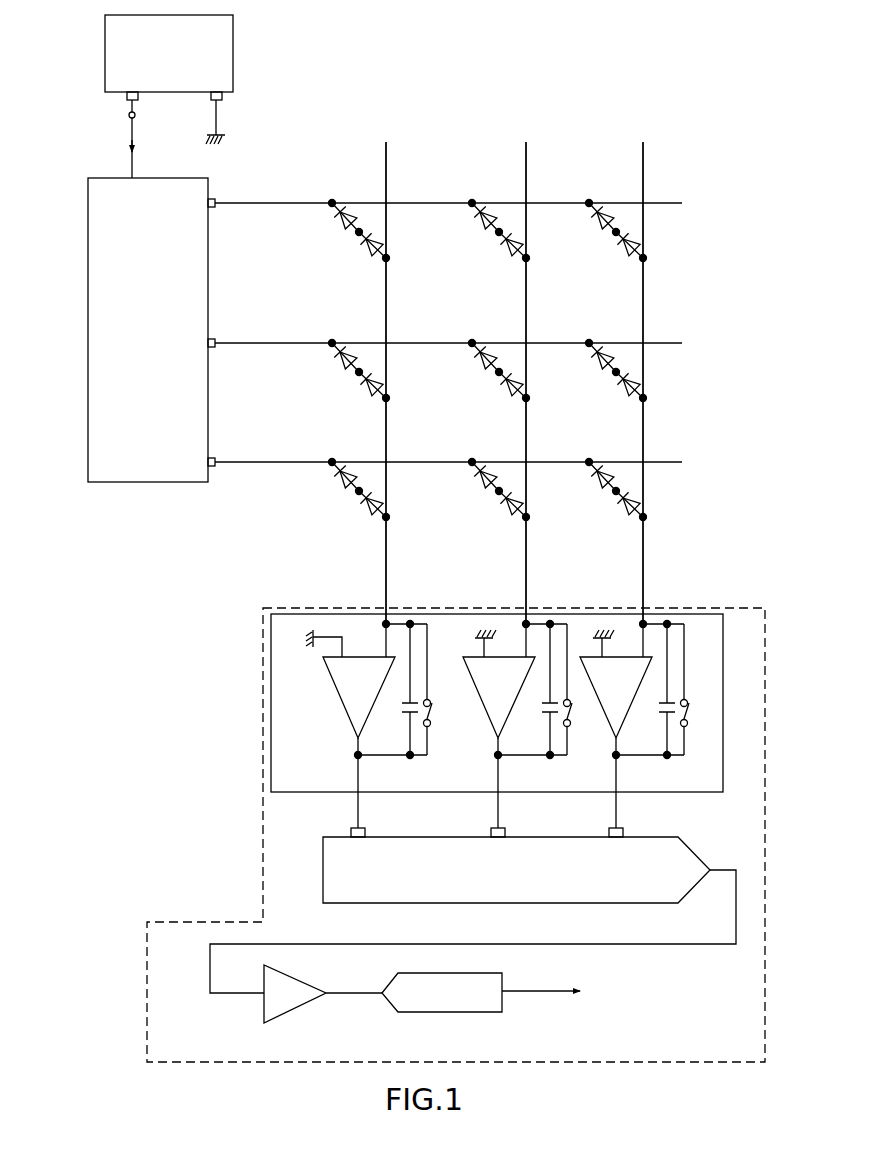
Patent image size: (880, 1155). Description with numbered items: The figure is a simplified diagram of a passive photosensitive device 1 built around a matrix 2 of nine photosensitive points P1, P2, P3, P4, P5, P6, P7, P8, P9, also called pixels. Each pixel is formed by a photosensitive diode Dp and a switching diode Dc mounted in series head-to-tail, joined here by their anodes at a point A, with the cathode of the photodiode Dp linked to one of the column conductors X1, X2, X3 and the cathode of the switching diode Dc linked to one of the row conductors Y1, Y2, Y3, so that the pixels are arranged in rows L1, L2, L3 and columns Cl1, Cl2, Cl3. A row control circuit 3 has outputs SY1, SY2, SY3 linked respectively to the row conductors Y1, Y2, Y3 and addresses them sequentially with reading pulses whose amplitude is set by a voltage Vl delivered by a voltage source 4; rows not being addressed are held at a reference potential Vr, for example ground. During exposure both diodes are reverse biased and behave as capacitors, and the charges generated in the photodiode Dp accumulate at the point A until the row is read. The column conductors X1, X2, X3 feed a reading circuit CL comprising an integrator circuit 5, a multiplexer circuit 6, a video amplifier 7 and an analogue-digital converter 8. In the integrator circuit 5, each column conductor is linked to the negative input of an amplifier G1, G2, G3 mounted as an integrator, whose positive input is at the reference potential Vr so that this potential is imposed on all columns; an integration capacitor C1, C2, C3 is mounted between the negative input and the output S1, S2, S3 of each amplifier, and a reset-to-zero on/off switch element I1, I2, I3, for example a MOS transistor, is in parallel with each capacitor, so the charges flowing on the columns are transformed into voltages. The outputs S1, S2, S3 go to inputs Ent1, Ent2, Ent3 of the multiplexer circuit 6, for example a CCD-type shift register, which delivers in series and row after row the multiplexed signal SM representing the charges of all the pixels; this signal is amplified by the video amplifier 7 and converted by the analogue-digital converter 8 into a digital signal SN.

The photosensitive device 1 is at (617, 36).
The matrix 2 is at (676, 56).
The row control circuit 3 is at (88, 298).
The voltage source 4 is at (233, 58).
The integrator circuit 5 is at (723, 765).
The multiplexer circuit 6 is at (678, 837).
The video amplifier 7 is at (306, 1002).
The analogue-digital converter 8 is at (470, 1012).
The reading circuit CL is at (261, 798).
The photosensitive point P1 is at (317, 266).
The photosensitive point P2 is at (457, 266).
The photosensitive point P3 is at (574, 266).
The photosensitive point P4 is at (317, 406).
The photosensitive point P5 is at (457, 406).
The photosensitive point P6 is at (574, 406).
The photosensitive point P7 is at (317, 525).
The photosensitive point P8 is at (457, 525).
The photosensitive point P9 is at (574, 525).
The switching diode Dc is at (333, 219).
The photosensitive diode Dp is at (358, 253).
The point A is at (354, 235).
The column conductor X1 is at (386, 158).
The column conductor X2 is at (526, 160).
The column conductor X3 is at (643, 158).
The row conductor Y1 is at (676, 203).
The row conductor Y2 is at (676, 343).
The row conductor Y3 is at (676, 462).
The column Cl1 is at (378, 151).
The column Cl2 is at (515, 151).
The column Cl3 is at (632, 151).
The row L1 is at (705, 230).
The row L2 is at (705, 370).
The row L3 is at (705, 490).
The output of the row control circuit SY1 is at (215, 209).
The output of the row control circuit SY2 is at (215, 349).
The output of the row control circuit SY3 is at (215, 468).
The amplifier G1 is at (338, 697).
The amplifier G2 is at (490, 704).
The amplifier G3 is at (608, 716).
The integration capacitor C1 is at (403, 712).
The integration capacitor C2 is at (540, 712).
The integration capacitor C3 is at (662, 712).
The on/off switch element I1 is at (432, 696).
The on/off switch element I2 is at (571, 694).
The on/off switch element I3 is at (693, 696).
The output of the amplifier S1 is at (355, 757).
The output of the amplifier S2 is at (495, 757).
The output of the amplifier S3 is at (614, 757).
The input of the multiplexer circuit Ent1 is at (352, 828).
The input of the multiplexer circuit Ent2 is at (494, 828).
The input of the multiplexer circuit Ent3 is at (612, 828).
The multiplexed signal SM is at (473, 923).
The digital signal SN is at (541, 982).
The voltage Vl is at (142, 139).
The reference potential Vr is at (228, 116).